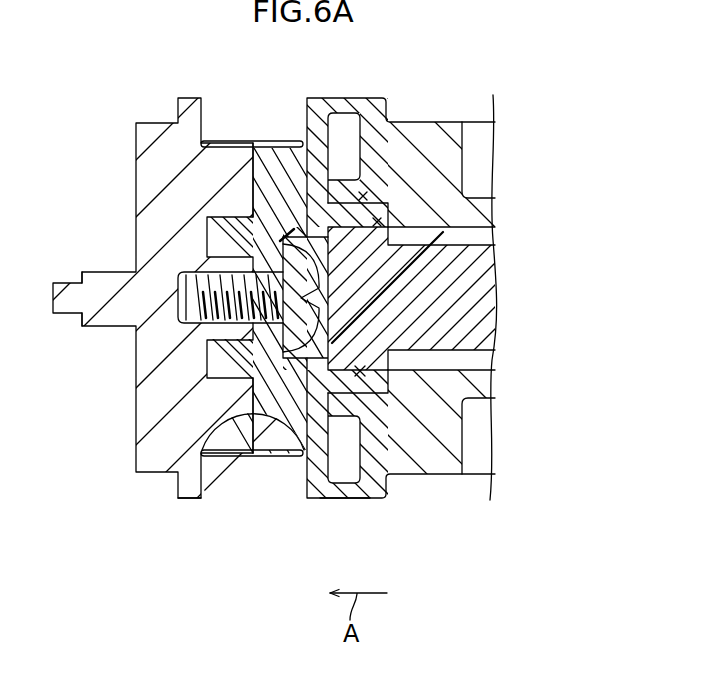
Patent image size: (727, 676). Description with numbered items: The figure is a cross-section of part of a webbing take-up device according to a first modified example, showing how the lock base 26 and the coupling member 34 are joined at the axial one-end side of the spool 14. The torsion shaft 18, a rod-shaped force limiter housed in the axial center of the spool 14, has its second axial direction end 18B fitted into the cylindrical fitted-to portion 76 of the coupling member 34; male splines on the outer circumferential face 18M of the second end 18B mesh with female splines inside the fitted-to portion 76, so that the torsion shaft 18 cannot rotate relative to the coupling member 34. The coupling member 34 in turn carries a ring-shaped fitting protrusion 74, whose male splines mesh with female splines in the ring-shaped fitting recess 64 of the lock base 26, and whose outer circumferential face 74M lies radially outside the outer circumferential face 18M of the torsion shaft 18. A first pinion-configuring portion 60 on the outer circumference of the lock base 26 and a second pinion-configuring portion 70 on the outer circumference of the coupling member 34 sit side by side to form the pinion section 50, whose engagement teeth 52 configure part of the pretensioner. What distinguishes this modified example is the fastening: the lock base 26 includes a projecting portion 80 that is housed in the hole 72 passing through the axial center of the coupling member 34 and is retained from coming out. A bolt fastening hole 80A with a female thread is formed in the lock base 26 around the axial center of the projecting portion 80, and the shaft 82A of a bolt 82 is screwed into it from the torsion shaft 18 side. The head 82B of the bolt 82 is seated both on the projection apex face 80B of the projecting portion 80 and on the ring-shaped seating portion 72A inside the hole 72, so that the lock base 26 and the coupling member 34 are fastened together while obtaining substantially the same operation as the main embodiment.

The spool 14 is at (452, 480).
The torsion shaft 18 is at (440, 365).
The second axial direction end 18B is at (376, 223).
The outer circumferential face 18M is at (372, 374).
The lock base 26 is at (150, 487).
The coupling member 34 is at (317, 507).
The pinion section 50 is at (222, 517).
The engagement teeth 52 is at (243, 140).
The first pinion-configuring portion 60 is at (218, 455).
The fitting recess 64 is at (247, 211).
The second pinion-configuring portion 70 is at (275, 457).
The hole 72 is at (258, 215).
The seating portion 72A is at (284, 233).
The fitting protrusion 74 is at (238, 213).
The outer circumferential face 74M is at (215, 381).
The fitted-to portion 76 is at (363, 198).
The projecting portion 80 is at (212, 228).
The bolt fastening hole 80A is at (236, 252).
The projection apex face 80B is at (318, 235).
The bolt 82 is at (318, 263).
The shaft 82A is at (215, 324).
The head 82B is at (320, 300).